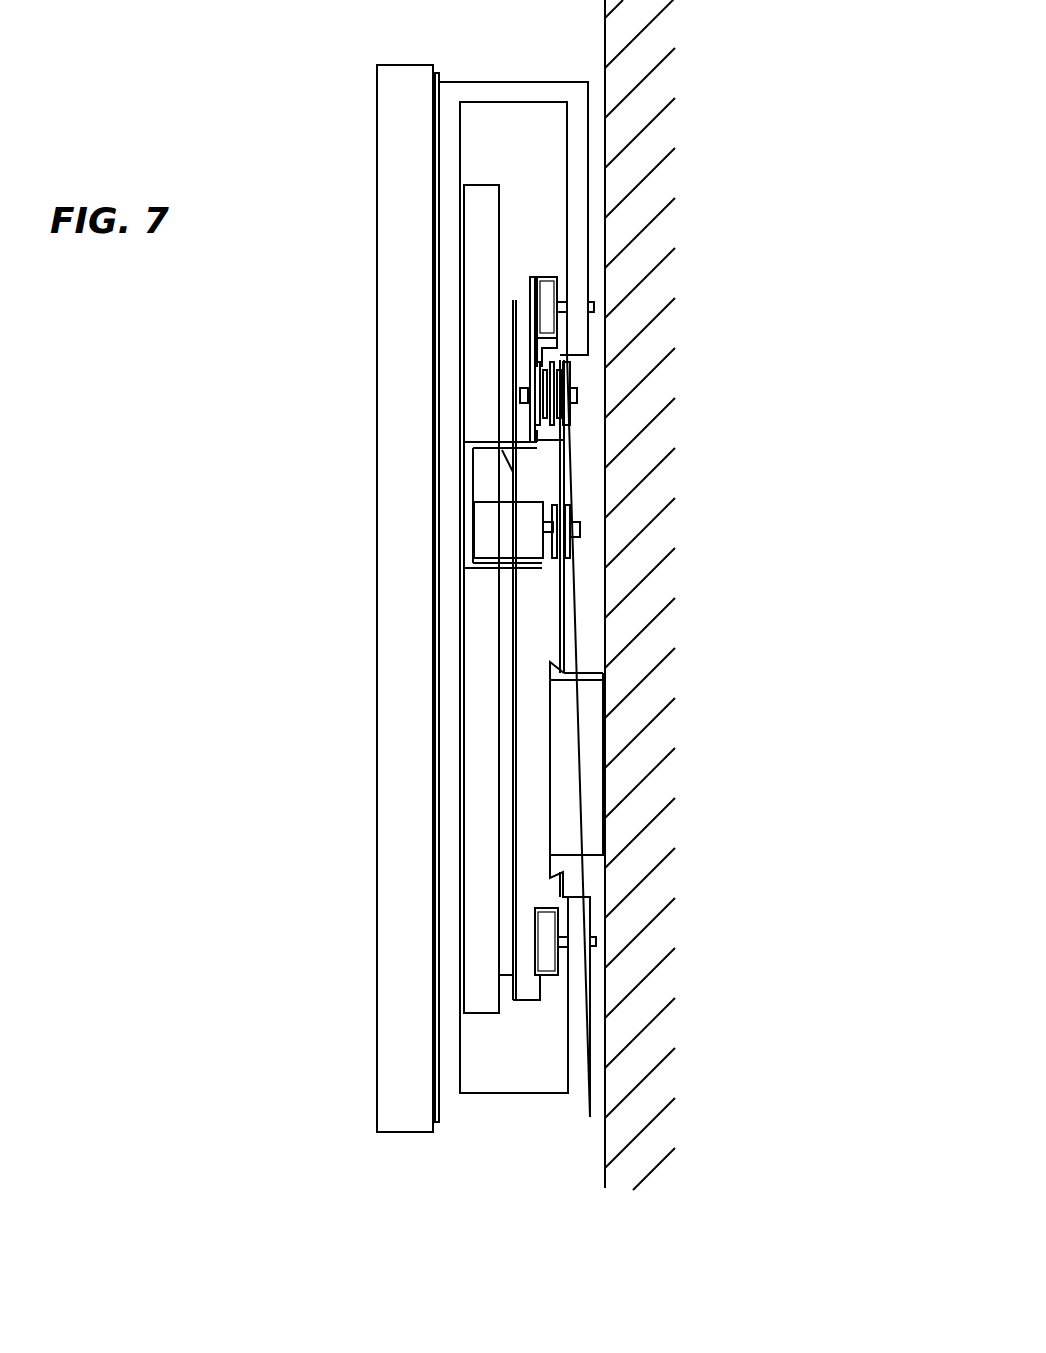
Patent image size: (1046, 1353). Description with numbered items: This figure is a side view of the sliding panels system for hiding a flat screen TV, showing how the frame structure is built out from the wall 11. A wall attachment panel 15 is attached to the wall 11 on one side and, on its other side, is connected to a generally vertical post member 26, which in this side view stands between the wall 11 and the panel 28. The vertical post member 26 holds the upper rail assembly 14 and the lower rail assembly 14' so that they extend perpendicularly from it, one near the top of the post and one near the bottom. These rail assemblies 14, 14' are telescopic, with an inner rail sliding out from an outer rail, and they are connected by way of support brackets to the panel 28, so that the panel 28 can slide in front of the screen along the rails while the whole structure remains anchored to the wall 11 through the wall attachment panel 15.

The wall 11 is at (668, 816).
The upper rail assembly 14 is at (509, 231).
The lower rail assembly 14' is at (530, 1077).
The wall attachment panel 15 is at (606, 680).
The vertical post member 26 is at (555, 628).
The panel 28 is at (400, 297).